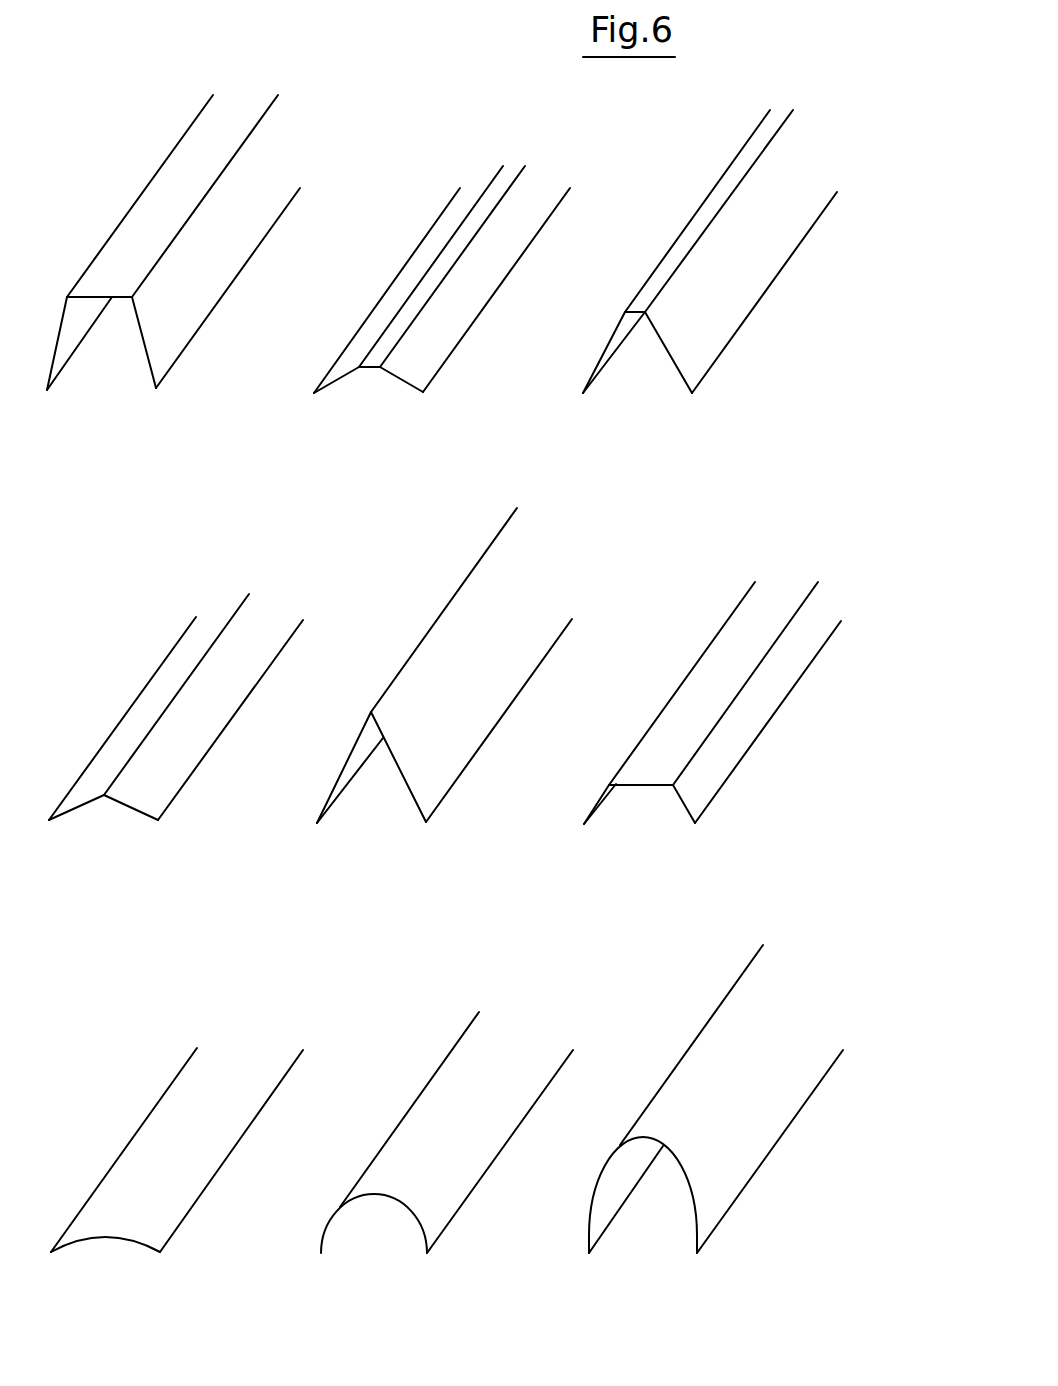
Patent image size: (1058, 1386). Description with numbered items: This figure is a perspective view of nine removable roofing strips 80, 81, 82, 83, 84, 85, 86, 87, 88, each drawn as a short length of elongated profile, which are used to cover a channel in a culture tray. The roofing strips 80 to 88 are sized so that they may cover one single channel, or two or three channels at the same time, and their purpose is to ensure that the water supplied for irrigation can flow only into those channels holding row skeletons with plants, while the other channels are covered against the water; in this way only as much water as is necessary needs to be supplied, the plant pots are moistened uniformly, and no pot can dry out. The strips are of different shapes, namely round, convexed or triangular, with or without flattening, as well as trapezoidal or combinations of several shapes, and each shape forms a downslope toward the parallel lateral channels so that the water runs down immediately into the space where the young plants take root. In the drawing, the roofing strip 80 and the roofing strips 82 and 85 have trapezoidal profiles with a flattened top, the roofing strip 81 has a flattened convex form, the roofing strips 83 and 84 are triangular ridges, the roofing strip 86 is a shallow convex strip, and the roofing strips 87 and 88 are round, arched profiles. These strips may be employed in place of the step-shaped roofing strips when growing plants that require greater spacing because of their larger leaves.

The roofing strip 80 is at (157, 342).
The roofing strip 81 is at (406, 357).
The roofing strip 82 is at (686, 345).
The roofing strip 83 is at (135, 788).
The roofing strip 84 is at (413, 765).
The roofing strip 85 is at (692, 782).
The roofing strip 86 is at (141, 1217).
The roofing strip 87 is at (402, 1185).
The roofing strip 88 is at (706, 1167).